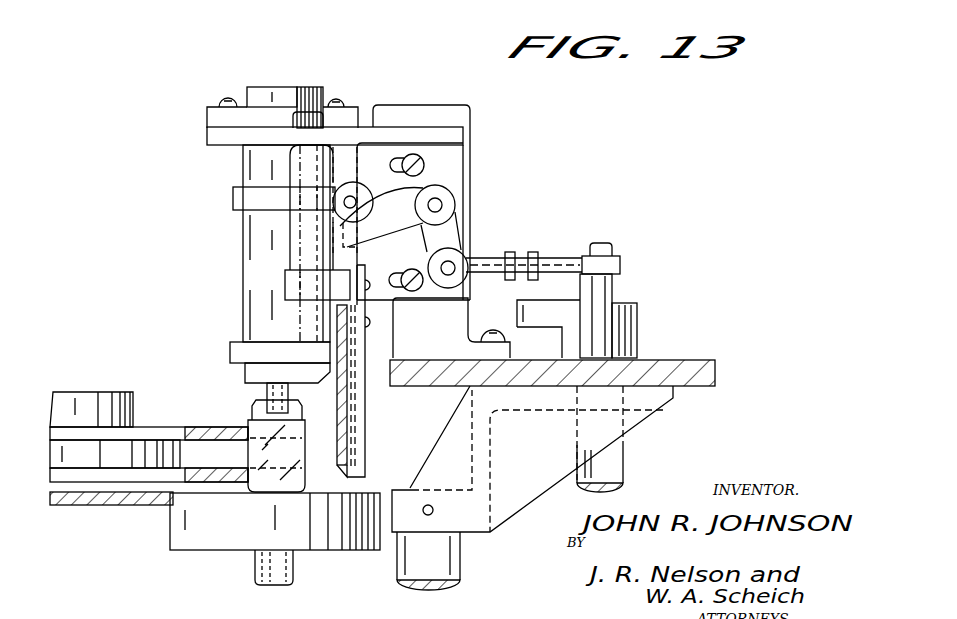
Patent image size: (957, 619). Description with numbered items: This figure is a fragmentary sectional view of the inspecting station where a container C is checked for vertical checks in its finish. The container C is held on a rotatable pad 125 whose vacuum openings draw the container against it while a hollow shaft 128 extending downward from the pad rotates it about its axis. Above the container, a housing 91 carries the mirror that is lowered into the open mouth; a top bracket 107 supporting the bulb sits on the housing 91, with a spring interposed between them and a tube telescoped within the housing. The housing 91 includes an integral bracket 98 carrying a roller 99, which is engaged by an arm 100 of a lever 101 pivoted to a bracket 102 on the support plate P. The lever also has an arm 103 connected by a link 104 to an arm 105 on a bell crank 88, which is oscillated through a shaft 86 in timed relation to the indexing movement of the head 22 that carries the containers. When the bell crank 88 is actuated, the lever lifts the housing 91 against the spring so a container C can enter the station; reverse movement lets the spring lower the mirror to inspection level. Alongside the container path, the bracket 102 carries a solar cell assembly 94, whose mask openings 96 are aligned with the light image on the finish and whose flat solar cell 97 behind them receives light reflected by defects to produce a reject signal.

The indexing head 22 is at (158, 396).
The shaft 86 is at (618, 459).
The bell crank 88 is at (628, 302).
The housing 91 is at (252, 250).
The solar cell assembly 94 is at (372, 397).
The openings 96 is at (343, 455).
The flat solar cell 97 is at (358, 422).
The bracket 98 is at (247, 197).
The roller 99 is at (290, 262).
The arm 100 is at (455, 190).
The lever 101 is at (470, 190).
The bracket 102 is at (463, 118).
The arm 103 is at (447, 233).
The link 104 is at (548, 258).
The arm 105 is at (610, 290).
The top bracket 107 is at (218, 131).
The pad 125 is at (190, 530).
The hollow shaft 128 is at (272, 568).
The support plate P is at (702, 372).
The container C is at (260, 423).